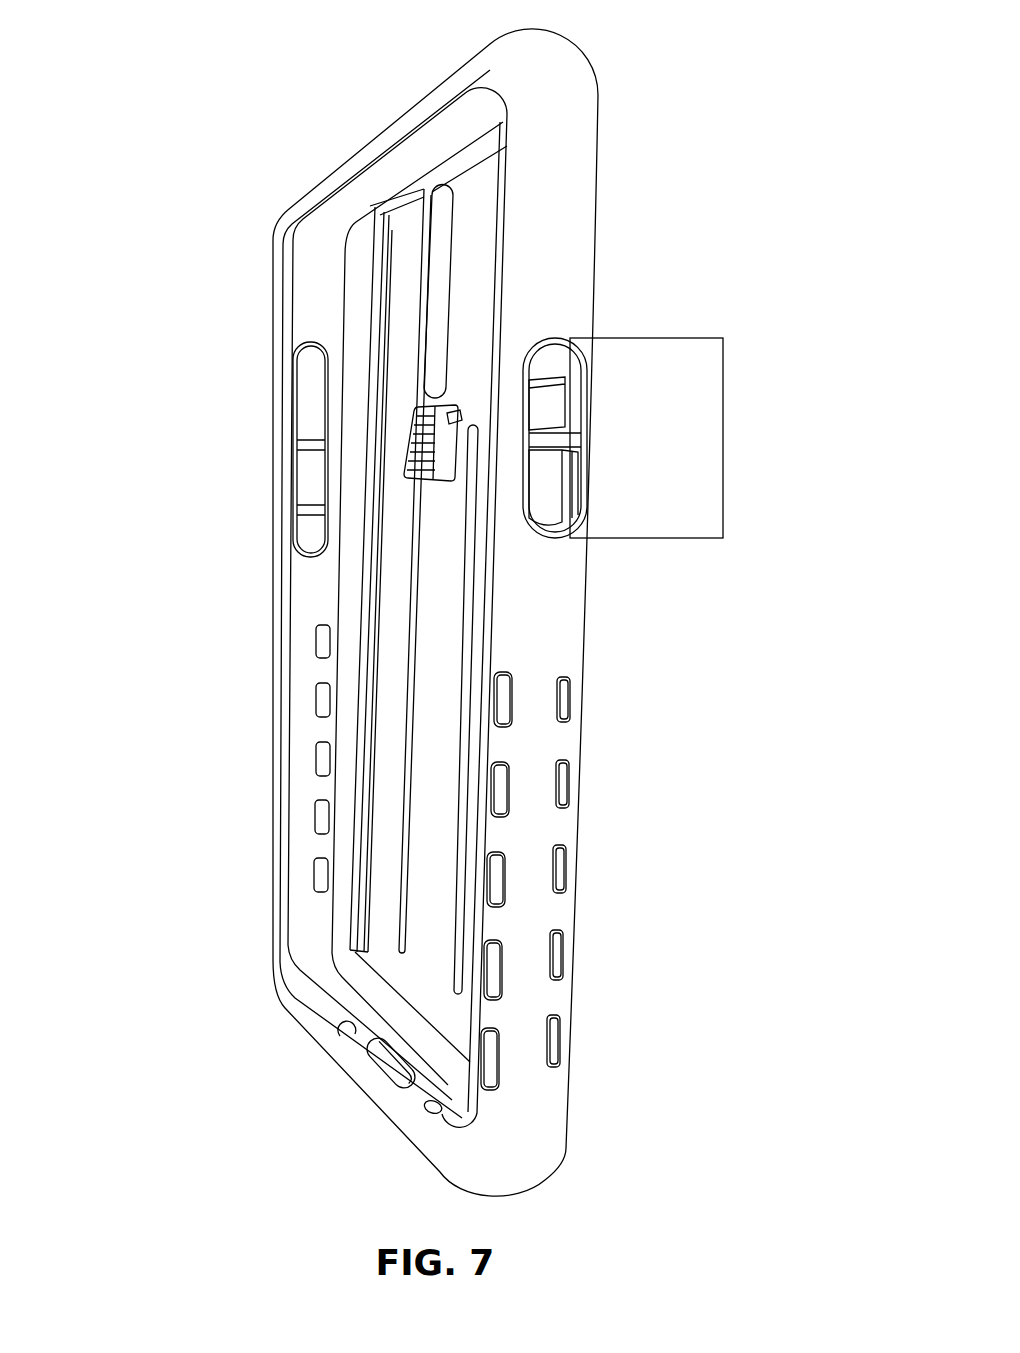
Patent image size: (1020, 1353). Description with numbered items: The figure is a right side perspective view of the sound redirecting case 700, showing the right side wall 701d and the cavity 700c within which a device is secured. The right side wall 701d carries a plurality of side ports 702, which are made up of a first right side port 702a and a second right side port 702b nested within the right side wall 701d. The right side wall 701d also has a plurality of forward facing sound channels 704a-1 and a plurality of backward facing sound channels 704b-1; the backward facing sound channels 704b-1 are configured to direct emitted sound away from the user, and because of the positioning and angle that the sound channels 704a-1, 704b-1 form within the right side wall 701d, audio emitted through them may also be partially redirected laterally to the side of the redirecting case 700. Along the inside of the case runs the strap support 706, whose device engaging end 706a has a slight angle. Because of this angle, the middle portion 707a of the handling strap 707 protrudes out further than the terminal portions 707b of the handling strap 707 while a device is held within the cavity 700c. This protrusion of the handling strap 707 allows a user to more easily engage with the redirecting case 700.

The sound redirecting case 700 is at (205, 388).
The cavity 700c is at (408, 331).
The right side wall 701d is at (540, 612).
The side ports 702 is at (723, 440).
The first right side port 702a is at (582, 388).
The second right side port 702b is at (582, 500).
The forward facing sound channels 704a-1 is at (506, 705).
The backward facing sound channels 704b-1 is at (568, 712).
The strap support 706 is at (447, 395).
The device engaging end 706a is at (416, 422).
The handling strap 707 is at (427, 563).
The middle portion 707a is at (398, 675).
The terminal portions 707b is at (450, 416).